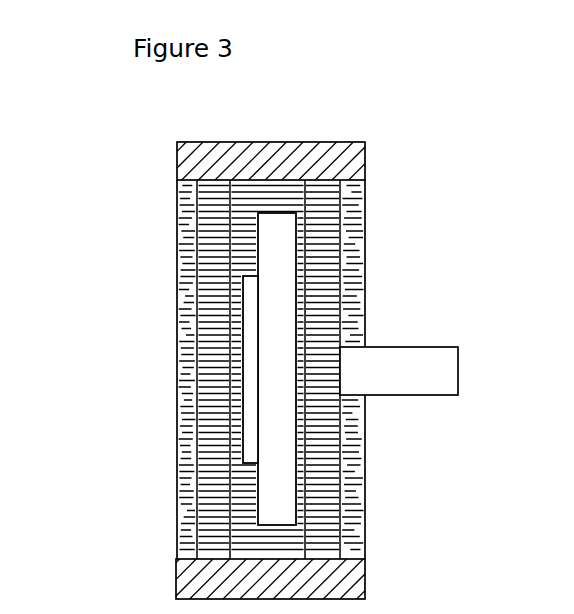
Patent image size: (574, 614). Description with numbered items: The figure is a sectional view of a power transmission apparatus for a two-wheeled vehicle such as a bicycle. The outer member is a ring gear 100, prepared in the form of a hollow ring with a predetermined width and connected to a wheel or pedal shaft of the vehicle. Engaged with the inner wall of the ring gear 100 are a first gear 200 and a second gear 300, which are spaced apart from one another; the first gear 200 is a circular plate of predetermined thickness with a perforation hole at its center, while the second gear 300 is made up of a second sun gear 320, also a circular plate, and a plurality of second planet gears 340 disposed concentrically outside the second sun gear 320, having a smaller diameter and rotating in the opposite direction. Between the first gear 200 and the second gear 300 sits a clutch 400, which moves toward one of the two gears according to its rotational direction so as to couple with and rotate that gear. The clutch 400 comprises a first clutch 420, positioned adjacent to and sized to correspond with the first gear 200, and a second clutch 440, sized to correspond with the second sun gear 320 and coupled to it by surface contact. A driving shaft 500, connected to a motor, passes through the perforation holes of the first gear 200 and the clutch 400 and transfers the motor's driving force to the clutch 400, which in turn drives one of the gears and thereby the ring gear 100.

The ring gear 100 is at (272, 148).
The first gear 200 is at (305, 210).
The second gear 300 is at (147, 368).
The second sun gear 320 is at (111, 213).
The second planet gears 340 is at (190, 213).
The clutch 400 is at (180, 368).
The first clutch 420 is at (270, 494).
The second clutch 440 is at (250, 429).
The driving shaft 500 is at (415, 355).